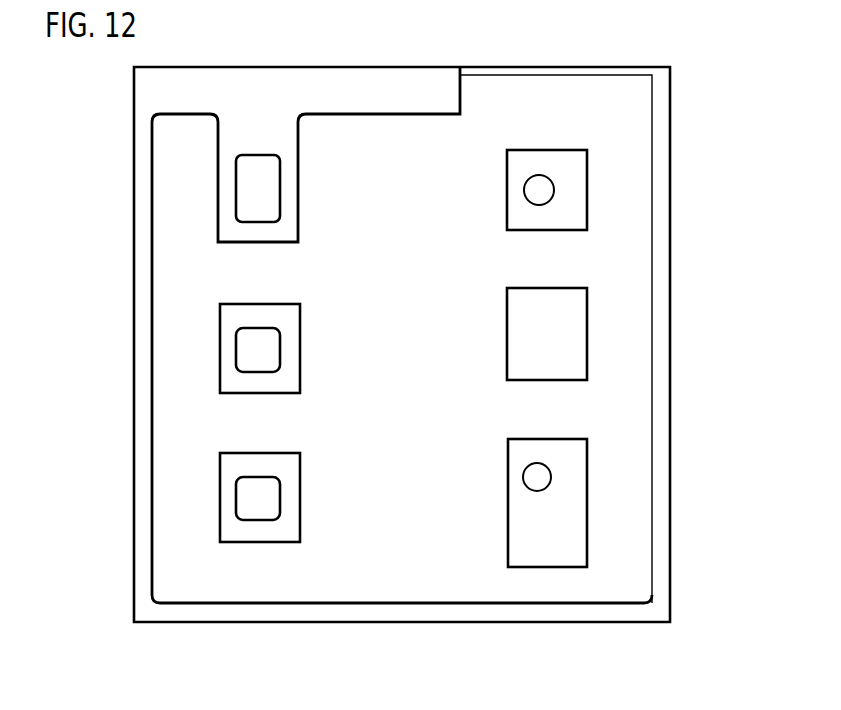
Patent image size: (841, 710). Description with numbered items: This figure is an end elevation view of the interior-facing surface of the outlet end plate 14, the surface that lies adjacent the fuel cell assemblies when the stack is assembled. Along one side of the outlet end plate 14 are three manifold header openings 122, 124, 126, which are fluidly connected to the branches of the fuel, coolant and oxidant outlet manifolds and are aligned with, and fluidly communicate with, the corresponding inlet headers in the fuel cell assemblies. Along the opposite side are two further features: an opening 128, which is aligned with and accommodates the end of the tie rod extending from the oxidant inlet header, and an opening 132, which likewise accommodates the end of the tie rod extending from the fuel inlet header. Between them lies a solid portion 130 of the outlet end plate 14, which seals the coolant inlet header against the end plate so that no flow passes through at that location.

The outlet end plate 14 is at (622, 120).
The manifold header opening 122 is at (253, 495).
The manifold header opening 124 is at (250, 347).
The manifold header opening 126 is at (253, 195).
The opening 128 is at (543, 475).
The solid portion 130 is at (567, 352).
The opening 132 is at (551, 193).